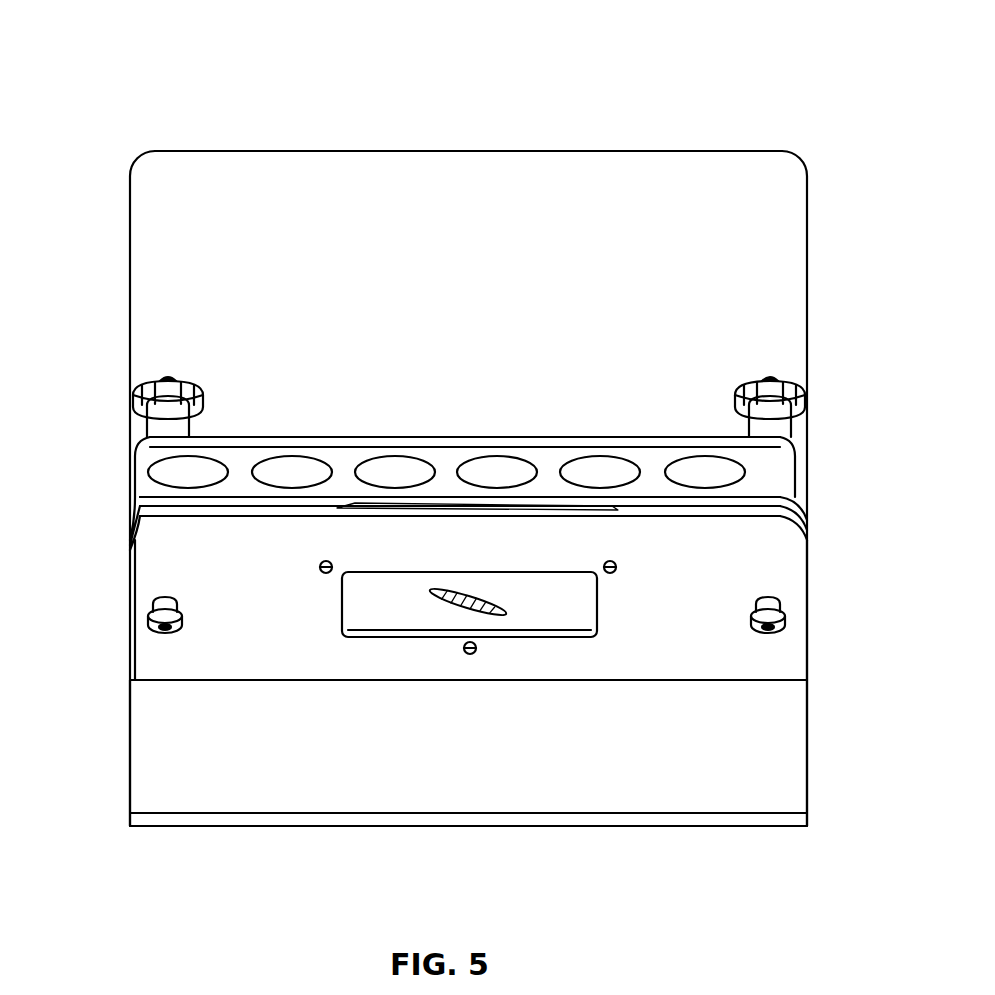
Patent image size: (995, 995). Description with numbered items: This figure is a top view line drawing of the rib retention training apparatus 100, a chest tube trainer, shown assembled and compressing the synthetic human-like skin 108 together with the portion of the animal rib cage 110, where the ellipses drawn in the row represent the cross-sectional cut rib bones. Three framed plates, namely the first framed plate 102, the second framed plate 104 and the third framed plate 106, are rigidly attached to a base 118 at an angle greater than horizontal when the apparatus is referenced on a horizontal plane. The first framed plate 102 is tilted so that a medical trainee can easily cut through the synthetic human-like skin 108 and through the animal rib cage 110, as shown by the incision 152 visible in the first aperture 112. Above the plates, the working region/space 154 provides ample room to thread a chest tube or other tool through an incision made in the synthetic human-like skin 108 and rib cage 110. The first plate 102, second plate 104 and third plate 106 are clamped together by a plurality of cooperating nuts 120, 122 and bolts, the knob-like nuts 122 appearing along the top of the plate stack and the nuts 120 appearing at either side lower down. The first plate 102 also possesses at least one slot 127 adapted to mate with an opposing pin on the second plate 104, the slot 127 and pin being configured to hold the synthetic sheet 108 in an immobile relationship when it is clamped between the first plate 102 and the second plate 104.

The rib retention training apparatus 100 is at (498, 53).
The first framed plate 102 is at (747, 572).
The second framed plate 104 is at (663, 497).
The third framed plate 106 is at (515, 437).
The synthetic human-like skin 108 is at (552, 605).
The portion of the animal rib cage 110 is at (396, 467).
The first aperture 112 is at (398, 596).
The base 118 is at (303, 215).
The nut 120 is at (165, 637).
The nut 122 is at (163, 382).
The slot 127 is at (470, 655).
The incision 152 is at (458, 593).
The working region/space 154 is at (542, 258).